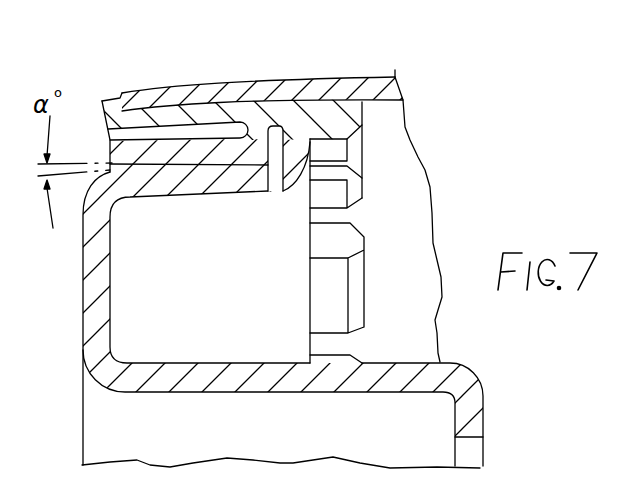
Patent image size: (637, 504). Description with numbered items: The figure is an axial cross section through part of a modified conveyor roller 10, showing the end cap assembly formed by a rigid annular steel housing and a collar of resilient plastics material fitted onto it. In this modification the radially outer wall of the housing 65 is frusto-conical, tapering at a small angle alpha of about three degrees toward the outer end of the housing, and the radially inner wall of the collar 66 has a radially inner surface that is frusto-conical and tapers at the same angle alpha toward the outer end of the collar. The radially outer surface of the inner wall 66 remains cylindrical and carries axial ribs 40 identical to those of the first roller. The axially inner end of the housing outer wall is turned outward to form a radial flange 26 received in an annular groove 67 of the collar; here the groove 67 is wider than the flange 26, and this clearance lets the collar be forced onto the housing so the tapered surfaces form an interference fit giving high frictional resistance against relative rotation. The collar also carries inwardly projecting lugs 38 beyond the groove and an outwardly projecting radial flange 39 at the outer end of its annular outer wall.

The conveyor roller 10 is at (240, 79).
The outer radial flange 26 is at (300, 137).
The lugs 38 is at (362, 135).
The radial flange 39 is at (103, 100).
The axial ribs 40 is at (173, 132).
The radially outer wall of the housing 65 is at (215, 152).
The radially inner wall of the collar 66 is at (168, 150).
The annular groove 67 is at (276, 150).